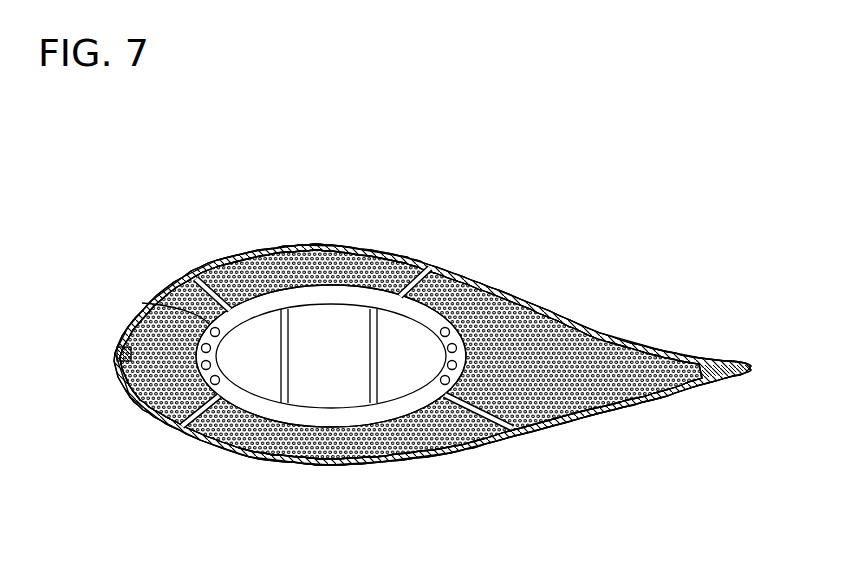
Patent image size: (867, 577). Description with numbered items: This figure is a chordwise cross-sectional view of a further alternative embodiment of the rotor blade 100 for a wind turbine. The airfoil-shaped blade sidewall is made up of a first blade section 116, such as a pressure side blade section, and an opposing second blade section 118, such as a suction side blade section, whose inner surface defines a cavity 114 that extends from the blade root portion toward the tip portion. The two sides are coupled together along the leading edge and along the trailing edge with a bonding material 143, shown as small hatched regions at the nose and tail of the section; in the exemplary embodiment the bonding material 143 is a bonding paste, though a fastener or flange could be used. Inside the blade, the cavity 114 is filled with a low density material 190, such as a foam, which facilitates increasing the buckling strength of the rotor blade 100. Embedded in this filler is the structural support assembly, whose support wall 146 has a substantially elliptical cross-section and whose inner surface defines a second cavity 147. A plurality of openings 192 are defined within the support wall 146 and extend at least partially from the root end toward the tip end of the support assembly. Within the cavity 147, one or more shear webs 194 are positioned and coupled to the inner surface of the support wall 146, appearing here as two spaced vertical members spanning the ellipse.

The rotor blade 100 is at (625, 205).
The cavity 114 is at (577, 413).
The first blade section 116 is at (405, 205).
The second blade section 118 is at (467, 474).
The bonding material 143 is at (116, 351).
The support wall 146 is at (323, 283).
The cavity 147 is at (356, 365).
The low density material 190 is at (520, 358).
The openings 192 is at (142, 303).
The shear webs 194 is at (282, 386).